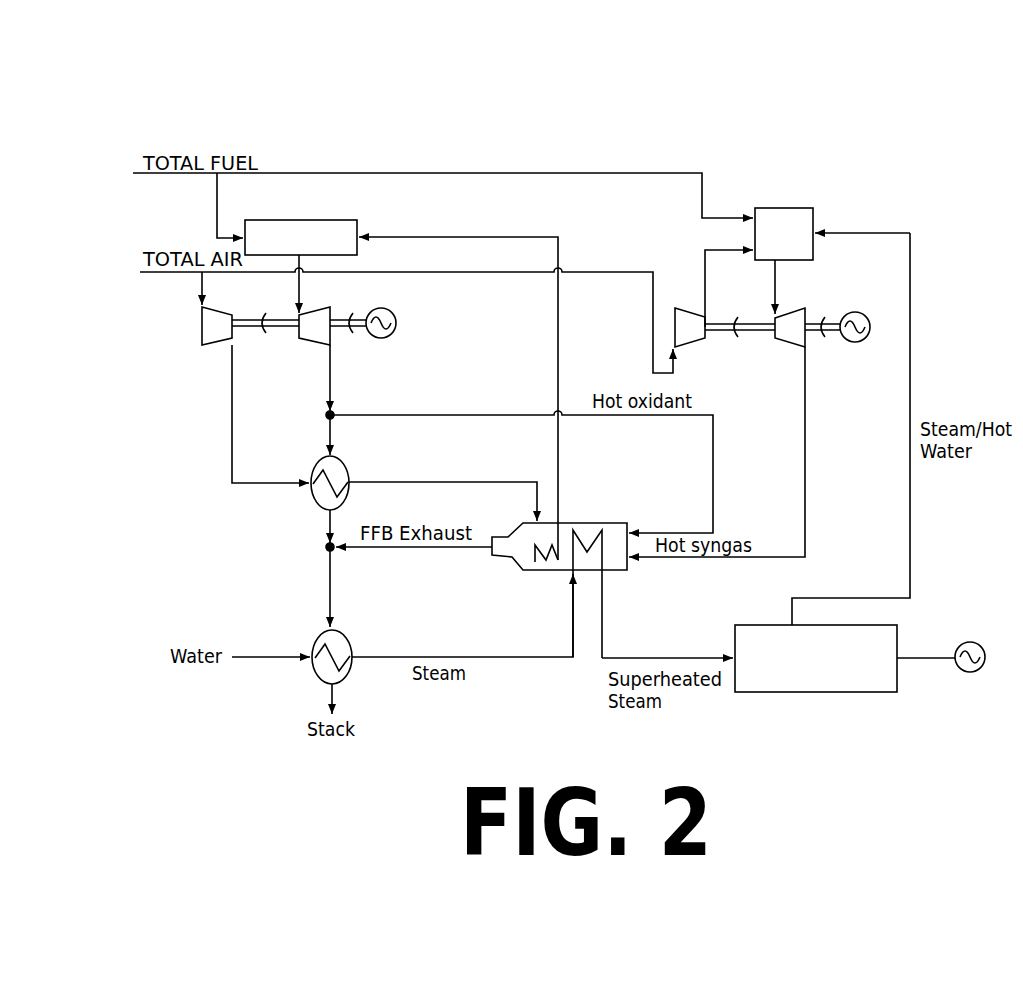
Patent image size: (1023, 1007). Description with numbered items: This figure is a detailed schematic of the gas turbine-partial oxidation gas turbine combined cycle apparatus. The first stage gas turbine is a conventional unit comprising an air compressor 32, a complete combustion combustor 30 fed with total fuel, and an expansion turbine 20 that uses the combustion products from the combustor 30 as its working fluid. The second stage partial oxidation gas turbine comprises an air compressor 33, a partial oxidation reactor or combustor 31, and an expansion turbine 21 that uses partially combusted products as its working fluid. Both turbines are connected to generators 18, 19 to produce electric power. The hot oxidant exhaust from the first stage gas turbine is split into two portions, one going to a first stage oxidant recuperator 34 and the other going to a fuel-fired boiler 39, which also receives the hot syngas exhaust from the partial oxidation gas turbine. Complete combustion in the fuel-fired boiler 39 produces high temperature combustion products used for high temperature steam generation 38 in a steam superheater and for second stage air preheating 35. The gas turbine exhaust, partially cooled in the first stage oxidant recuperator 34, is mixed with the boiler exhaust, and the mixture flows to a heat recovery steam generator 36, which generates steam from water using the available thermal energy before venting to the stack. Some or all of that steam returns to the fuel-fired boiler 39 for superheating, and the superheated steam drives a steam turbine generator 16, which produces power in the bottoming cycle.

The steam turbine generator 16 is at (898, 675).
The generator 18 is at (384, 307).
The generator 19 is at (872, 325).
The expansion turbine 20 is at (320, 338).
The expansion turbine 21 is at (806, 313).
The combustor 30 is at (298, 219).
The partial oxidation reactor 31 is at (807, 208).
The air compressor 32 is at (200, 327).
The air compressor 33 is at (677, 310).
The first stage oxidant recuperator 34 is at (313, 470).
The second stage air preheating 35 is at (523, 560).
The heat recovery steam generator 36 is at (313, 672).
The high temperature steam generation 38 is at (604, 558).
The fuel-fired boiler 39 is at (523, 522).